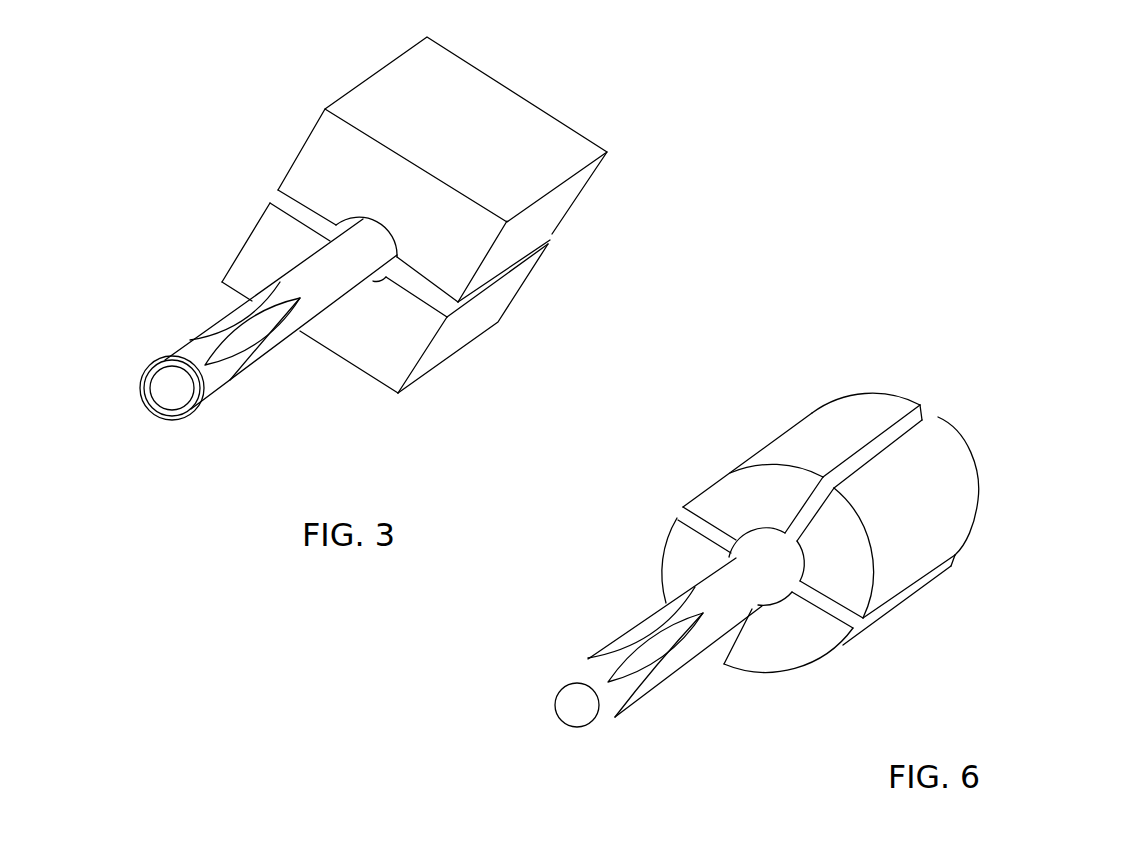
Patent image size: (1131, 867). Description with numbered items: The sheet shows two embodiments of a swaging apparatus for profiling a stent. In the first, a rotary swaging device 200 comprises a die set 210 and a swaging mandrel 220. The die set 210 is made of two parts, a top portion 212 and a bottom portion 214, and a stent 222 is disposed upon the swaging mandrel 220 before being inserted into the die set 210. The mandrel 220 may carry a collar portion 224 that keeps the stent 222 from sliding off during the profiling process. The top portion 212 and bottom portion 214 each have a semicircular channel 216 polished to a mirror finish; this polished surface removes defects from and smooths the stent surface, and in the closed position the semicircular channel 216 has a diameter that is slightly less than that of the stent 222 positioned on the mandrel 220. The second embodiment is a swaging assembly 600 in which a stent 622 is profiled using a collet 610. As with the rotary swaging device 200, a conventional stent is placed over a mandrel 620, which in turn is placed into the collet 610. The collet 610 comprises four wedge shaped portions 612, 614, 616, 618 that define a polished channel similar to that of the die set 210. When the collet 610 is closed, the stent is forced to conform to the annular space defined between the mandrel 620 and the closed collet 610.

In FIG. 3, the rotary swaging device 200 is at (197, 92).
In FIG. 3, the die set 210 is at (568, 117).
In FIG. 3, the top portion 212 is at (567, 203).
In FIG. 3, the bottom portion 214 is at (500, 300).
In FIG. 3, the semicircular channel 216 is at (377, 282).
In FIG. 3, the swaging mandrel 220 is at (176, 413).
In FIG. 3, the stent 222 is at (184, 343).
In FIG. 3, the collar portion 224 is at (140, 390).
In FIG. 6, the swaging assembly 600 is at (668, 424).
In FIG. 6, the collet 610 is at (970, 438).
In FIG. 6, the wedge shaped portion 612 is at (977, 518).
In FIG. 6, the wedge shaped portion 614 is at (832, 413).
In FIG. 6, the wedge shaped portion 616 is at (787, 662).
In FIG. 6, the wedge shaped portion 618 is at (684, 551).
In FIG. 6, the mandrel 620 is at (584, 740).
In FIG. 6, the stent 622 is at (584, 659).